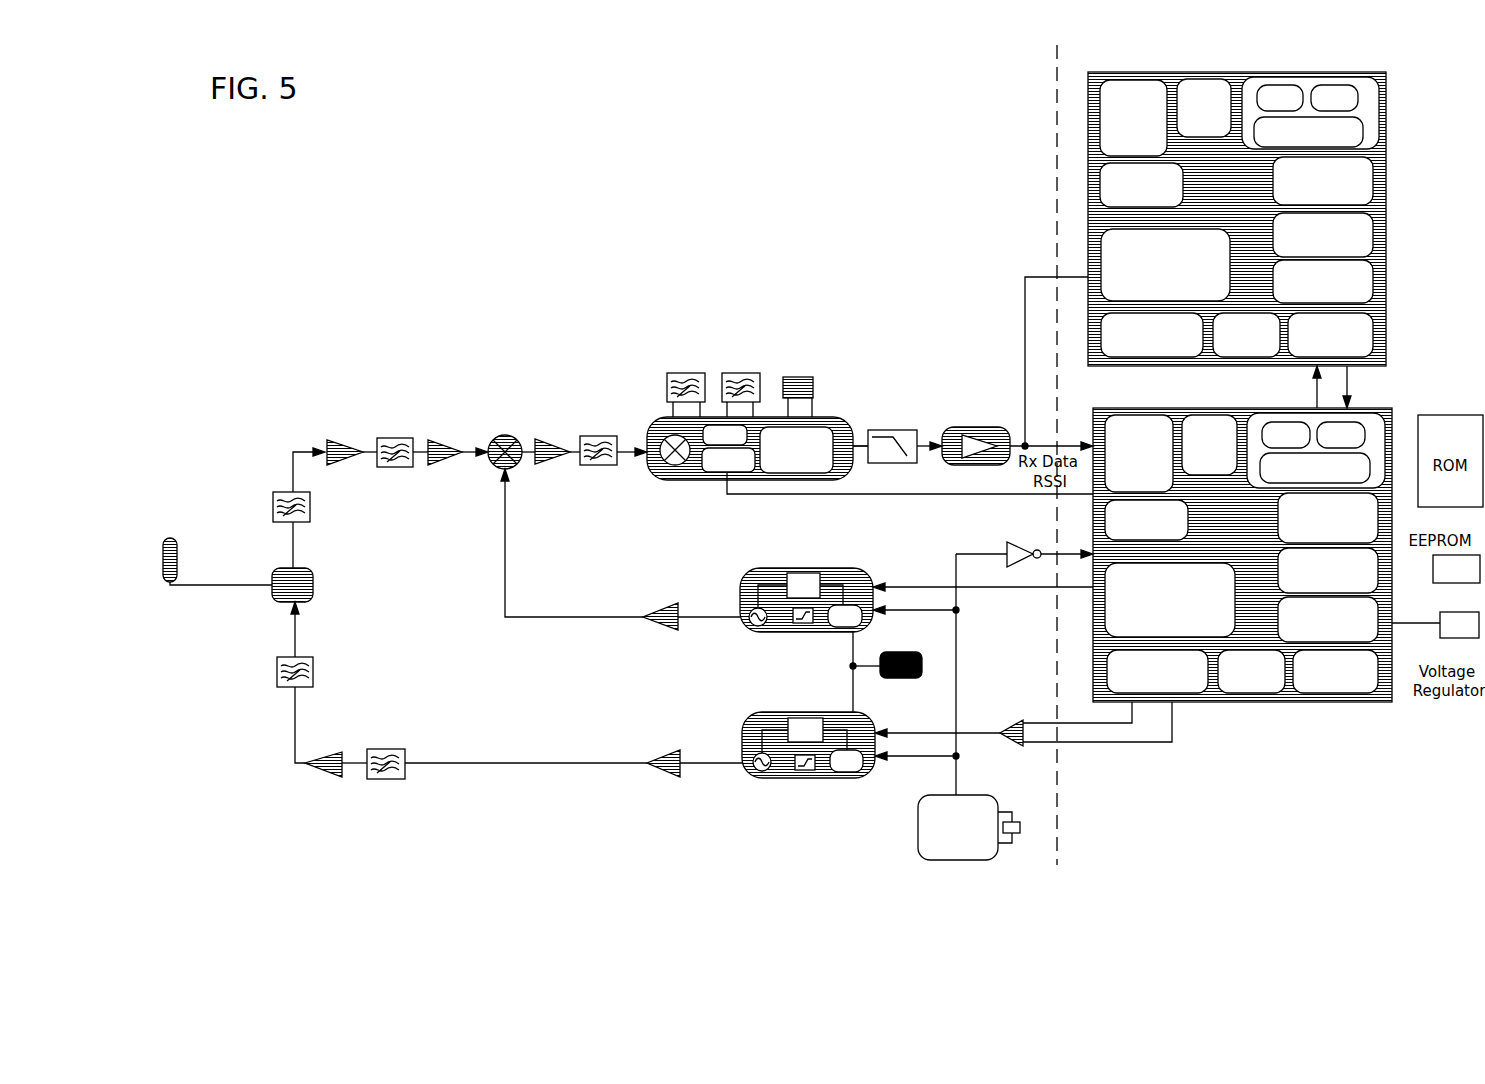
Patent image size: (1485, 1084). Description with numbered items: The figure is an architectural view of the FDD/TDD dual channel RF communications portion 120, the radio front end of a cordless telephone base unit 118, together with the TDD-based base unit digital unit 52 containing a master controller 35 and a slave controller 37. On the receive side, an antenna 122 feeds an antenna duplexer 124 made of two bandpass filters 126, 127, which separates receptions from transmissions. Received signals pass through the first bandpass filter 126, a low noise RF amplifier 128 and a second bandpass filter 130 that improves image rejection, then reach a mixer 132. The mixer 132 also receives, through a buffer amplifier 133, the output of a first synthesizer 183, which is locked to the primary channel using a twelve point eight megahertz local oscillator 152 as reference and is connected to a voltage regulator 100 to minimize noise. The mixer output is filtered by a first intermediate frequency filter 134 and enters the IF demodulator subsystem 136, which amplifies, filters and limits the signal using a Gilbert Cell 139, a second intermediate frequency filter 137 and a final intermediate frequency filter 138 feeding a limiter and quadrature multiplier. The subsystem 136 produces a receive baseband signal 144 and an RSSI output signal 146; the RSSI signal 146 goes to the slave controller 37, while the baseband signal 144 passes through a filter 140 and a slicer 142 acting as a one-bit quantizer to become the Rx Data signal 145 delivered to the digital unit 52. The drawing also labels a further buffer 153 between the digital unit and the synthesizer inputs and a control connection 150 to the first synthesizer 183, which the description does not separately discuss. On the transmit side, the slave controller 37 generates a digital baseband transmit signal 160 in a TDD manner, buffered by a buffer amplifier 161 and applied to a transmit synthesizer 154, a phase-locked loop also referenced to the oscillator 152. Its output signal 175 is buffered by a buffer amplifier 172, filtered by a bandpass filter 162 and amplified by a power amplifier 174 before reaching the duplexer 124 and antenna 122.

The base unit digital unit 52 is at (1405, 115).
The master controller 35 is at (1387, 173).
The slave controller 37 is at (1382, 407).
The RF communications portion 120 is at (450, 257).
The base unit 118 is at (258, 827).
The antenna 122 is at (172, 538).
The antenna duplexer 124 is at (303, 602).
The first bandpass filter 126 is at (273, 522).
The bandpass filter 127 is at (313, 670).
The low noise RF amplifier 128 is at (338, 463).
The second bandpass filter 130 is at (398, 467).
The mixer 132 is at (508, 437).
The buffer amplifier 133 is at (657, 610).
The first intermediate frequency filter 134 is at (598, 435).
The intermediate frequency demodulator subsystem 136 is at (648, 467).
The second intermediate frequency filter 137 is at (683, 373).
The final intermediate frequency filter 138 is at (727, 373).
The Gilbert Cell 139 is at (813, 388).
The filter 140 is at (915, 430).
The slicer 142 is at (1007, 427).
The receive baseband signal 144 is at (860, 465).
The Rx Data signal 145 is at (1025, 390).
The RSSI output signal 146 is at (837, 497).
The synthesizer control line 150 is at (988, 587).
The local oscillator 152 is at (998, 857).
The HC04 buffer 153 is at (1018, 543).
The transmit synthesizer 154 is at (843, 778).
The digital baseband transmit signal 160 is at (973, 732).
The buffer amplifier 161 is at (1012, 737).
The bandpass filter 162 is at (387, 750).
The buffer amplifier 172 is at (658, 752).
The power amplifier 174 is at (327, 757).
The transmit output signal 175 is at (712, 763).
The first synthesizer 183 is at (740, 578).
The voltage regulator 100 is at (913, 680).